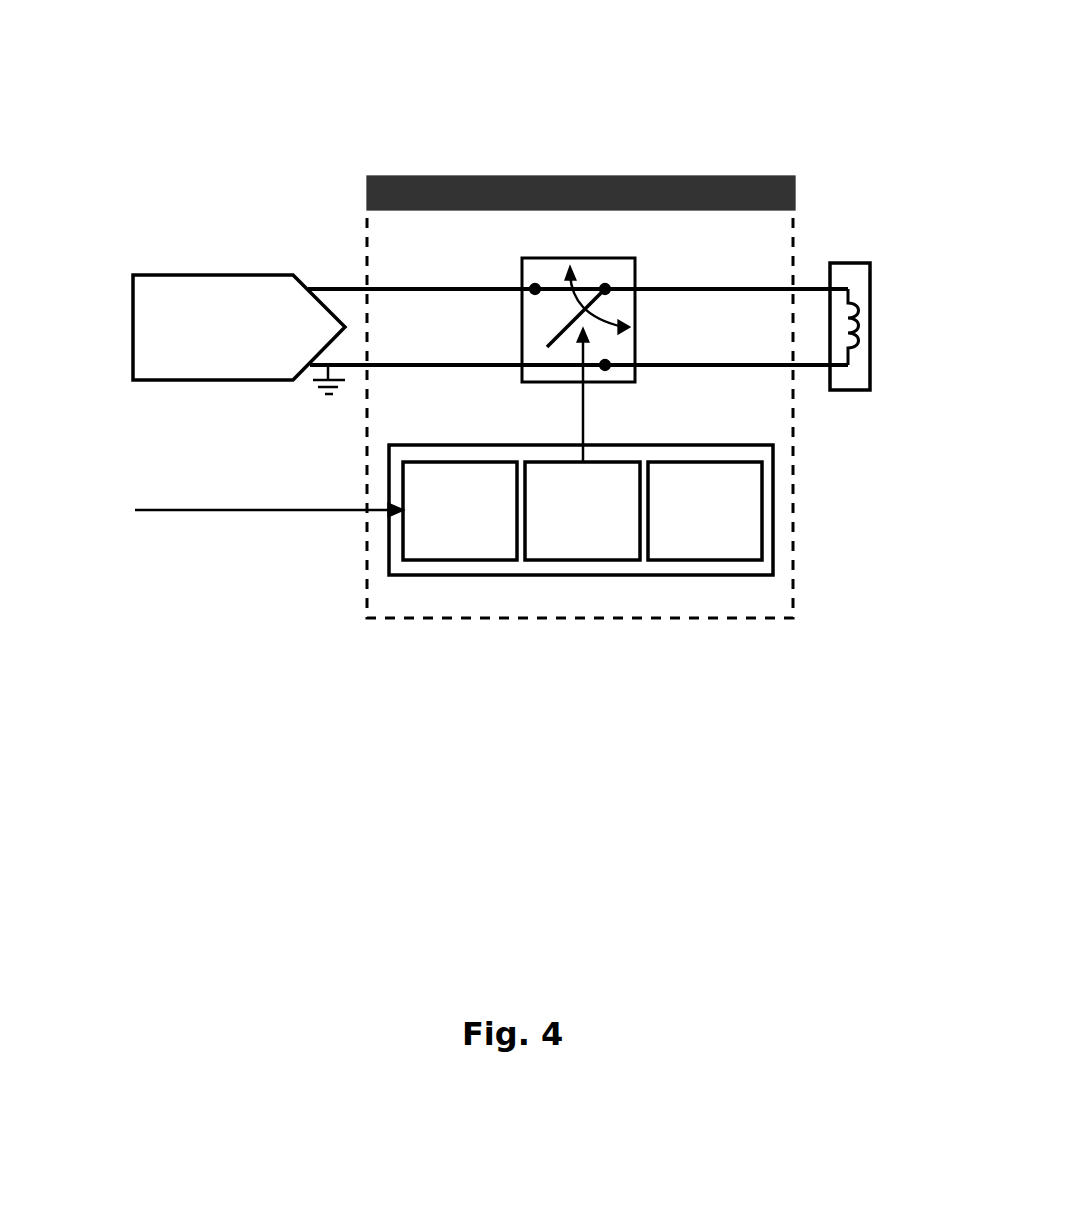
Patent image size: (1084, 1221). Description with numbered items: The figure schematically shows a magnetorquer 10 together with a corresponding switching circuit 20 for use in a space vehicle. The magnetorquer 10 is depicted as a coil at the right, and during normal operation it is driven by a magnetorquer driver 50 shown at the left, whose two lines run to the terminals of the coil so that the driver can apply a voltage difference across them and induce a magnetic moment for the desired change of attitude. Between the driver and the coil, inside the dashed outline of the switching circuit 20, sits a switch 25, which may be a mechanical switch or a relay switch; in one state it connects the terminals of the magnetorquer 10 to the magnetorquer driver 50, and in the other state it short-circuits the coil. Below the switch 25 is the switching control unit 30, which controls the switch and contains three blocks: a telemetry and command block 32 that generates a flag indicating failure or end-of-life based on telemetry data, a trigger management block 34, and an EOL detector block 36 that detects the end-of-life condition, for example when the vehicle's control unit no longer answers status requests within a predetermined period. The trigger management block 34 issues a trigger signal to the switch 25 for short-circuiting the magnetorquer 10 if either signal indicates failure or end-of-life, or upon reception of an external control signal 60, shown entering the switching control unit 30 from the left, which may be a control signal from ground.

The magnetorquer 10 is at (850, 261).
The switching circuit 20 is at (767, 621).
The switch 25 is at (577, 258).
The switching control unit 30 is at (400, 578).
The telemetry and command block 32 is at (460, 562).
The trigger management block 34 is at (587, 562).
The EOL detector block 36 is at (707, 562).
The magnetorquer driver 50 is at (215, 272).
The external control signal 60 is at (150, 508).